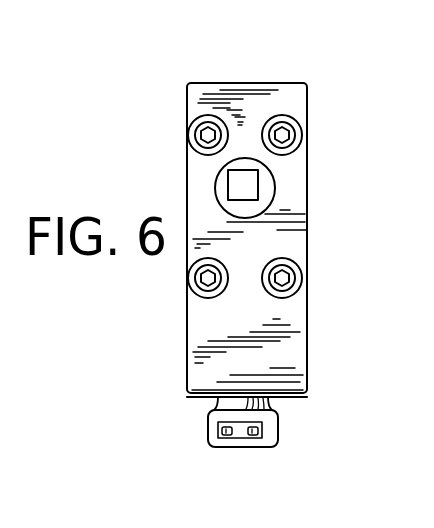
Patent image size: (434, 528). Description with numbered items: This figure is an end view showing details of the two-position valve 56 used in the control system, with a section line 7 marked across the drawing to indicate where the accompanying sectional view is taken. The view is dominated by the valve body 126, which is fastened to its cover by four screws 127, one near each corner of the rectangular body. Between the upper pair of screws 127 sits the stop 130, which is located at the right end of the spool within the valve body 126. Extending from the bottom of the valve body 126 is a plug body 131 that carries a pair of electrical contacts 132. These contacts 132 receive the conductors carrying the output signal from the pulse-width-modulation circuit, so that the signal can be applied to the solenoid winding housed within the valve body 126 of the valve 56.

The section line 7- 7 is at (187, 25).
The two-position valve 56 is at (348, 462).
The valve body 126 is at (302, 360).
The screws 127 is at (190, 132).
The stop 130 is at (258, 188).
The plug body 131 is at (279, 418).
The electrical contacts 132 is at (255, 433).